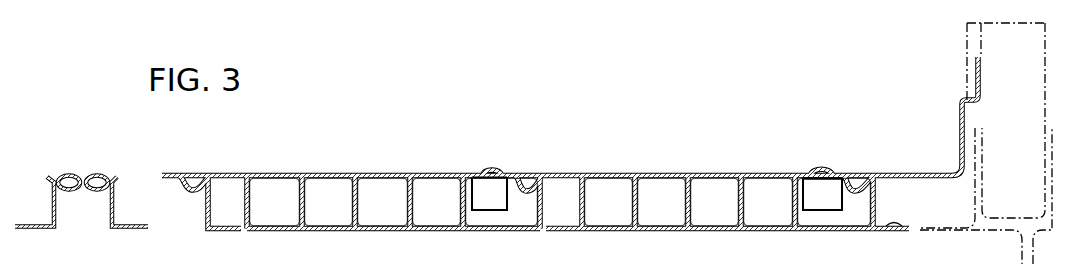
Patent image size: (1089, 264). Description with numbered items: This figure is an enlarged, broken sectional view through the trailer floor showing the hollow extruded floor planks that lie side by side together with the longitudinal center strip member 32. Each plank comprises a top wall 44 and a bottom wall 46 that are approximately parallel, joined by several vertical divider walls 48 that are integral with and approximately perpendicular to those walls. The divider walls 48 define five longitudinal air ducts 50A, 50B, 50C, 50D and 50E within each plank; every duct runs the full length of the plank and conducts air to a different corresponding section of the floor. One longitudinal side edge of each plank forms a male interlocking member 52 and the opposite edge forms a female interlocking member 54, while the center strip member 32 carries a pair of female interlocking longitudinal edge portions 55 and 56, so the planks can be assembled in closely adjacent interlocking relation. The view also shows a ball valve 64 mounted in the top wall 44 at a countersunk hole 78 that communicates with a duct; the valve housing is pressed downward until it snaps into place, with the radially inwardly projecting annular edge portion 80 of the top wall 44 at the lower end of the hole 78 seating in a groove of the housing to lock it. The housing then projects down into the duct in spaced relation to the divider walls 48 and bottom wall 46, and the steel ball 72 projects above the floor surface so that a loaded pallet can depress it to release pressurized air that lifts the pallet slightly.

The longitudinal center strip member 32 is at (83, 171).
The top wall 44 is at (302, 174).
The bottom wall 46 is at (337, 232).
The vertical divider walls 48 is at (405, 188).
The longitudinal air duct 50A is at (504, 226).
The longitudinal air duct 50B is at (432, 210).
The longitudinal air duct 50C is at (377, 210).
The longitudinal air duct 50D is at (323, 210).
The longitudinal air duct 50E is at (269, 210).
The male interlocking member 52 is at (200, 181).
The female interlocking member 54 is at (189, 176).
The female interlocking longitudinal edge portion 55 is at (64, 176).
The female interlocking longitudinal edge portion 56 is at (101, 176).
The ball valve 64 is at (474, 214).
The steel ball 72 is at (492, 170).
The countersunk hole 78 is at (503, 176).
The radially inwardly projecting annular edge portion 80 is at (822, 195).